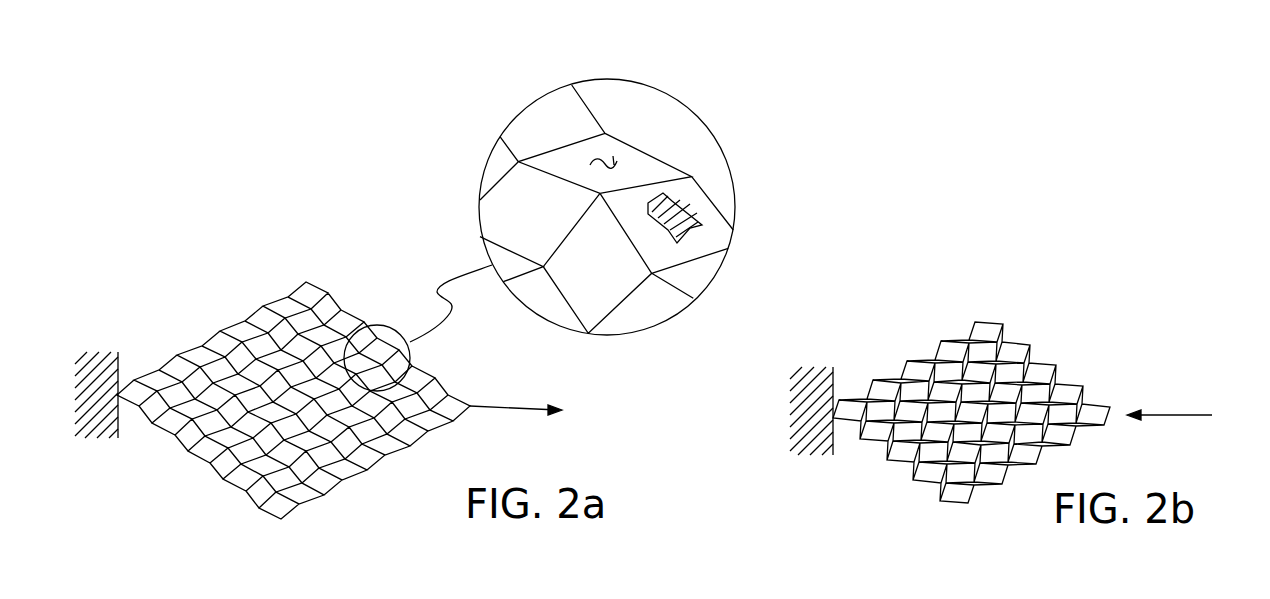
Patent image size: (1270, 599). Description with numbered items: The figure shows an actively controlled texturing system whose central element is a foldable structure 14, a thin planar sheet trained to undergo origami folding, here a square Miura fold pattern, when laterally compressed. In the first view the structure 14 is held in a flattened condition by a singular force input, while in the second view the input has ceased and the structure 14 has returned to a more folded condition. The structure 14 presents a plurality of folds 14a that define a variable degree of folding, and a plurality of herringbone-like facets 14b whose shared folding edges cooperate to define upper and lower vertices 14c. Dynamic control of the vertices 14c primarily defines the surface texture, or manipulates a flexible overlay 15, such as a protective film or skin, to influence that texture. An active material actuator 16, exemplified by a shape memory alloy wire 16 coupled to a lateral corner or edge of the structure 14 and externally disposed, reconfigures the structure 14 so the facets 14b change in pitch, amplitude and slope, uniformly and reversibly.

In FIG. 2A, the foldable structure 14 is at (274, 288).
In FIG. 2B, the foldable structure 14 is at (951, 322).
In FIG. 2A, the folds 14a is at (565, 143).
In FIG. 2A, the herringbone-like facets 14b is at (383, 326).
In FIG. 2A, the upper and lower vertices 14c is at (602, 192).
In FIG. 2A, the flexible overlay 15 is at (610, 156).
In FIG. 2A, the active material actuator 16 is at (490, 407).